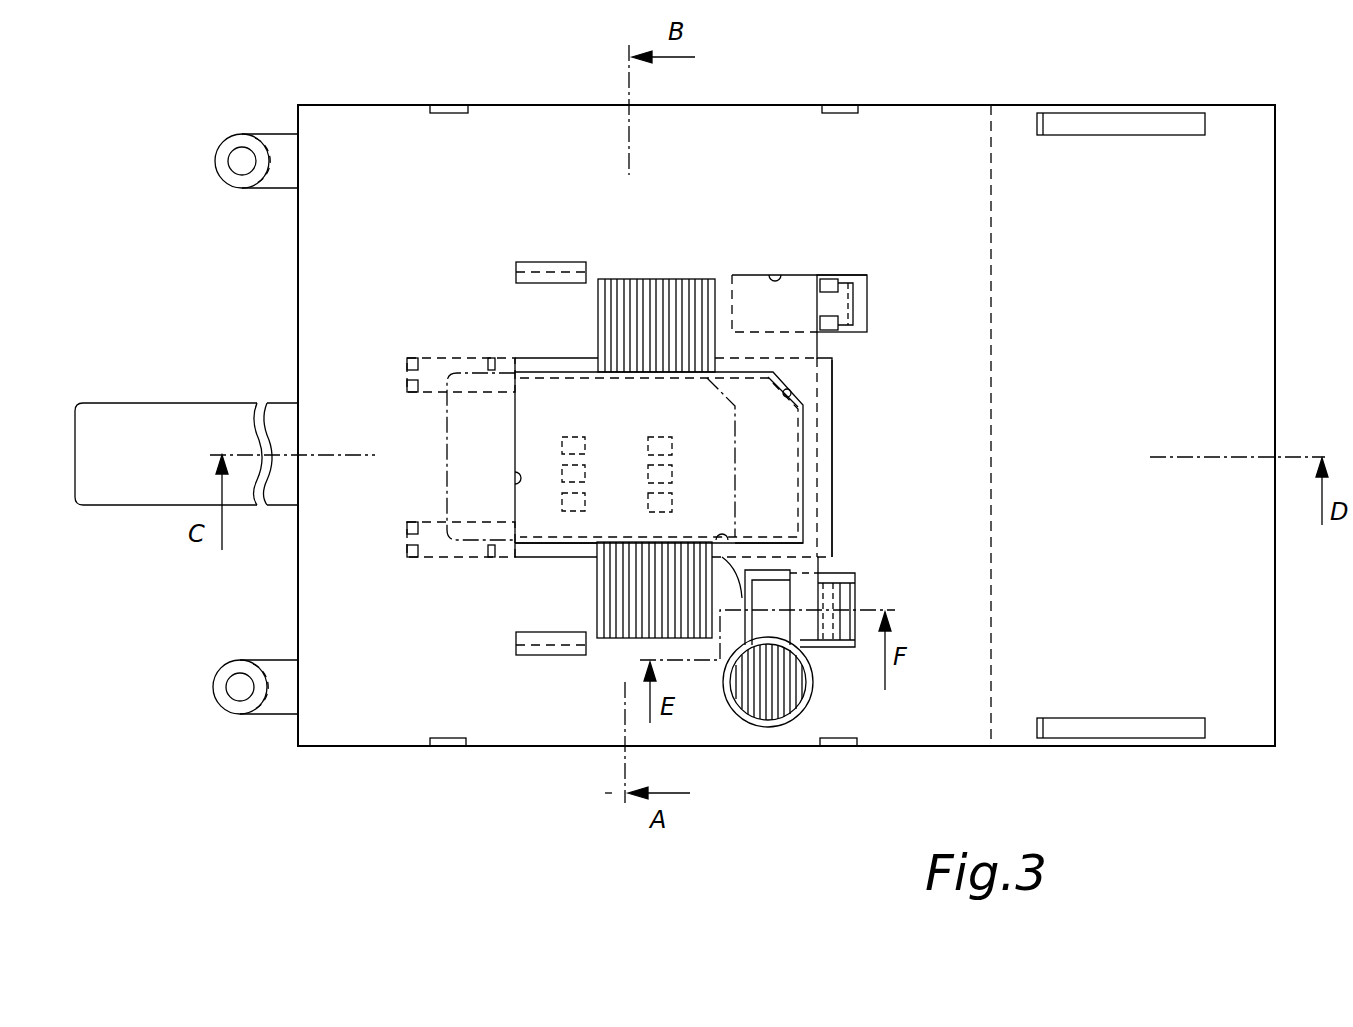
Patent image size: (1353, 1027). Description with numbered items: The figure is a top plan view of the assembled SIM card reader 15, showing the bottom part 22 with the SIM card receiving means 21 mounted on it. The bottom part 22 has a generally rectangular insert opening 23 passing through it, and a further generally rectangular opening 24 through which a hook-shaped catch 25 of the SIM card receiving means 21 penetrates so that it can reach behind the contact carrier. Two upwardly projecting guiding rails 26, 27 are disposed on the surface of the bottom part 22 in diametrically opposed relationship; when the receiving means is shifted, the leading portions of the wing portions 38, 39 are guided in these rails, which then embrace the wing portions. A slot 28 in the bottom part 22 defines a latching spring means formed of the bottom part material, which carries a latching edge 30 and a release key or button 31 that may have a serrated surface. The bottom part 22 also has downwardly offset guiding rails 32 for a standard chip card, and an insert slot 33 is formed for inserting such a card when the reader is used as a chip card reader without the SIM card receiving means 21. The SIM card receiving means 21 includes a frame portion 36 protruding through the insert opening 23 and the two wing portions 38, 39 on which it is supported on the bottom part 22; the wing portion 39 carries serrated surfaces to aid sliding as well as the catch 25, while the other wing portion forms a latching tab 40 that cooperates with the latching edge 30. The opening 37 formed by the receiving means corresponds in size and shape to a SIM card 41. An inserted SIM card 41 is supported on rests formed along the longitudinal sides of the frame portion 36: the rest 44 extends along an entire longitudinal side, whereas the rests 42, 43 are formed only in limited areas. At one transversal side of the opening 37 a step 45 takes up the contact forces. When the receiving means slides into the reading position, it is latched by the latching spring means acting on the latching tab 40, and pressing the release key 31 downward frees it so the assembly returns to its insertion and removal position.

The SIM card reader 15 is at (822, 82).
The SIM card receiving means 21 is at (697, 272).
The bottom part 22 is at (918, 140).
The insert opening 23 is at (518, 478).
The rectangular opening 24 is at (780, 277).
The catch 25 is at (858, 300).
The guiding rail 26 is at (545, 262).
The guiding rail 27 is at (548, 656).
The slot 28 is at (790, 658).
The latching edge 30 is at (722, 538).
The release key or button 31 is at (773, 700).
The downwardly offset guiding rails 32 is at (1128, 122).
The insert slot 33 is at (1280, 300).
The frame portion 36 is at (533, 554).
The opening 37 is at (792, 394).
The wing portion 38 is at (625, 590).
The wing portion 39 is at (640, 290).
The latching tab 40 is at (835, 600).
The SIM card 41 is at (462, 440).
The rest 42 is at (585, 536).
The rest 43 is at (763, 536).
The rest 44 is at (612, 372).
The step 45 is at (835, 432).